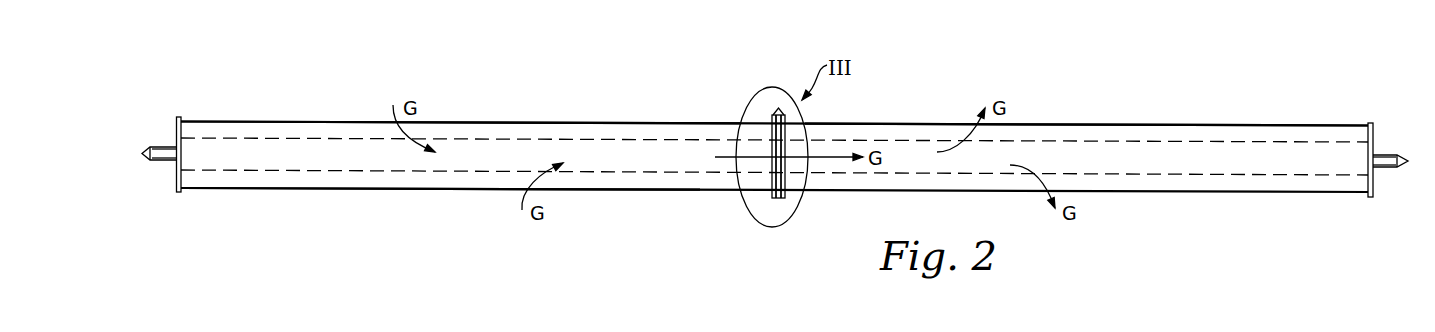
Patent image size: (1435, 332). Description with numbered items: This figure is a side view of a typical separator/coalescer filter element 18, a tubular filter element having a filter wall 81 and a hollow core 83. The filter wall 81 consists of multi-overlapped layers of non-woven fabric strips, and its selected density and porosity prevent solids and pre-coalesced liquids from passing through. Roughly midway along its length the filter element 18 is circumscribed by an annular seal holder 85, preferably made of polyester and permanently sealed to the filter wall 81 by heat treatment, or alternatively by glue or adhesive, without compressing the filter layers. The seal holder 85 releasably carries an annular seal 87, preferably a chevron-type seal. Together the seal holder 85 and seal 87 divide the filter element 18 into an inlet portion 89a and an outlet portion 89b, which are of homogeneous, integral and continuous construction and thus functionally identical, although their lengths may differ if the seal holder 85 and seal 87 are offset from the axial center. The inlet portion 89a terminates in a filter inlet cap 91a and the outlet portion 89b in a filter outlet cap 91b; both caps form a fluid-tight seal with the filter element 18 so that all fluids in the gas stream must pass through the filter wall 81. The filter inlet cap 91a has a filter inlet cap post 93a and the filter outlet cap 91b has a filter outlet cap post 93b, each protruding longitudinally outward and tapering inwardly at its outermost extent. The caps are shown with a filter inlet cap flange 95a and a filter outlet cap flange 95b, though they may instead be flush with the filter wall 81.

The separator/coalescer filter element 18 is at (490, 122).
The filter wall 81 is at (257, 188).
The hollow core 83 is at (353, 158).
The seal holder 85 is at (768, 180).
The seal 87 is at (778, 203).
The inlet portion 89a is at (337, 122).
The outlet portion 89b is at (1100, 125).
The filter inlet cap 91a is at (162, 145).
The filter outlet cap 91b is at (1380, 148).
The filter inlet cap post 93a is at (158, 160).
The filter outlet cap post 93b is at (1377, 167).
The filter inlet cap flange 95a is at (178, 117).
The filter outlet cap flange 95b is at (1370, 197).